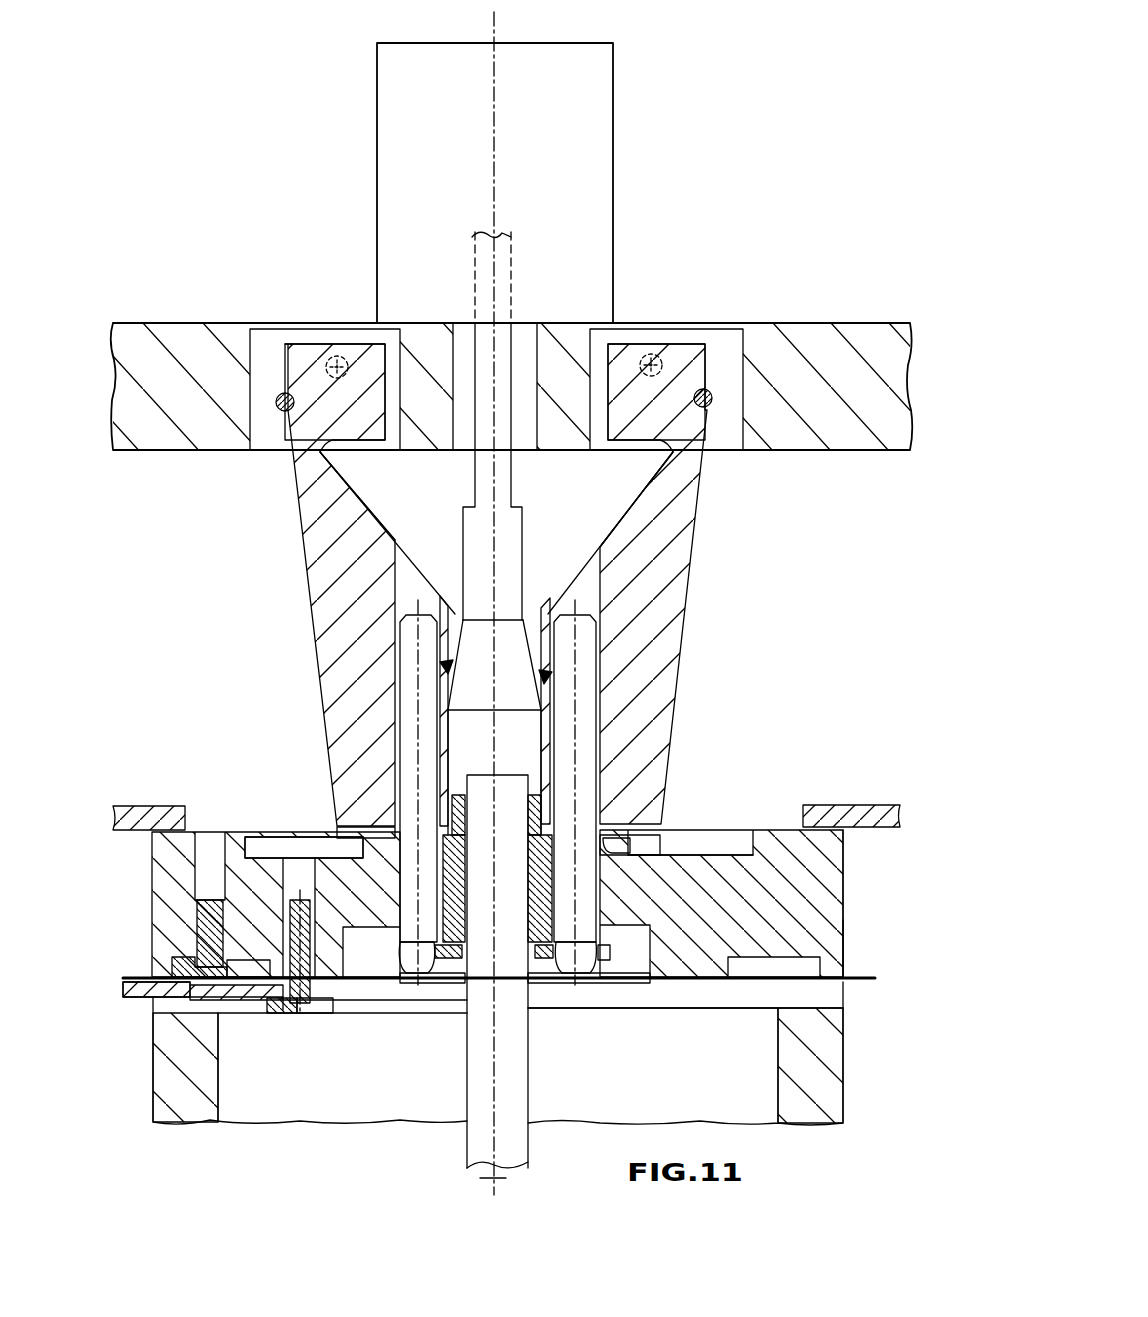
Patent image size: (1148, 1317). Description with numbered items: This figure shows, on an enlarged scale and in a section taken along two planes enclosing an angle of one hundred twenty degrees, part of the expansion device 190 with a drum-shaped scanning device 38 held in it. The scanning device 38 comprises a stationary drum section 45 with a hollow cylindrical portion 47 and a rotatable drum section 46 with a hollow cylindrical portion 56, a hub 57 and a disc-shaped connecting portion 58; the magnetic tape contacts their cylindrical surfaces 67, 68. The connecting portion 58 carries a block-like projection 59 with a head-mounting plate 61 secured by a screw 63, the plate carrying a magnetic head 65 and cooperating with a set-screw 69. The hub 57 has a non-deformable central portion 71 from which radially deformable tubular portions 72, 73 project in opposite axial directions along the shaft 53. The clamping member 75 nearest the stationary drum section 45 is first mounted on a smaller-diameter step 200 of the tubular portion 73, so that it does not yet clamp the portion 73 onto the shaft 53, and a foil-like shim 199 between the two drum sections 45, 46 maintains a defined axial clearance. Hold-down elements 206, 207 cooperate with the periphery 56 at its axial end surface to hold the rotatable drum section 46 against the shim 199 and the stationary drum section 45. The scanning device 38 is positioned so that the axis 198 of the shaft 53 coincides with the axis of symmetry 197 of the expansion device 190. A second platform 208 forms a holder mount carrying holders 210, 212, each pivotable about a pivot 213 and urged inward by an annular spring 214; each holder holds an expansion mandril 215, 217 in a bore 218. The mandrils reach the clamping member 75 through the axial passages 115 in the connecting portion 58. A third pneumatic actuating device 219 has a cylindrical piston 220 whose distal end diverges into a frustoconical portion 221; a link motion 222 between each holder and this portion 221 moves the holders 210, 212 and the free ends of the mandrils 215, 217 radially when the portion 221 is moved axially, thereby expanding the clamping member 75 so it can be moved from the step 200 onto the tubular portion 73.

The drum-shaped scanning device 38 is at (770, 1130).
The stationary drum section 45 is at (846, 1085).
The rotatable drum section 46 is at (846, 905).
The hollow cylindrical portion 47 is at (818, 1048).
The shaft 53 is at (488, 1136).
The hollow cylindrical portion 56 is at (815, 871).
The hub 57 is at (455, 888).
The disc-shaped connecting portion 58 is at (703, 897).
The block-like projection 59 is at (255, 1016).
The head-mounting plate 61 is at (365, 997).
The screw 63 is at (320, 1016).
The magnetic head 65 is at (195, 957).
The cylindrical surface 67 is at (850, 930).
The cylindrical surface 68 is at (843, 1016).
The set-screw 69 is at (235, 996).
The central portion 71 is at (540, 867).
The tubular portion 72 is at (528, 798).
The tubular portion 73 is at (528, 927).
The clamping member 75 is at (620, 952).
The passage 115 is at (345, 836).
The expansion device 190 is at (769, 112).
The axis of symmetry 197 is at (502, 38).
The axis 198 is at (492, 1185).
The foil-like shim 199 is at (140, 985).
The step 200 is at (450, 990).
The hold-down element 206 is at (160, 806).
The hold-down element 207 is at (828, 805).
The second platform 208 is at (815, 336).
The holder 210 is at (325, 557).
The holder 212 is at (658, 558).
The pivot 213 is at (337, 357).
The annular spring 214 is at (711, 407).
The expansion mandril 215 is at (407, 730).
The expansion mandril 217 is at (588, 746).
The bore 218 is at (403, 556).
The third pneumatic actuating device 219 is at (613, 220).
The cylindrical piston 220 is at (470, 526).
The frustoconical portion 221 is at (522, 704).
The link motion 222 is at (440, 662).